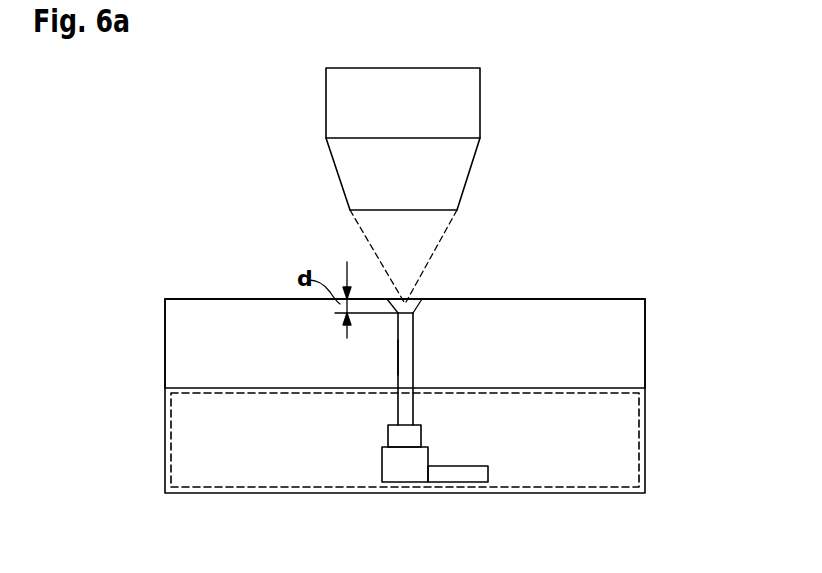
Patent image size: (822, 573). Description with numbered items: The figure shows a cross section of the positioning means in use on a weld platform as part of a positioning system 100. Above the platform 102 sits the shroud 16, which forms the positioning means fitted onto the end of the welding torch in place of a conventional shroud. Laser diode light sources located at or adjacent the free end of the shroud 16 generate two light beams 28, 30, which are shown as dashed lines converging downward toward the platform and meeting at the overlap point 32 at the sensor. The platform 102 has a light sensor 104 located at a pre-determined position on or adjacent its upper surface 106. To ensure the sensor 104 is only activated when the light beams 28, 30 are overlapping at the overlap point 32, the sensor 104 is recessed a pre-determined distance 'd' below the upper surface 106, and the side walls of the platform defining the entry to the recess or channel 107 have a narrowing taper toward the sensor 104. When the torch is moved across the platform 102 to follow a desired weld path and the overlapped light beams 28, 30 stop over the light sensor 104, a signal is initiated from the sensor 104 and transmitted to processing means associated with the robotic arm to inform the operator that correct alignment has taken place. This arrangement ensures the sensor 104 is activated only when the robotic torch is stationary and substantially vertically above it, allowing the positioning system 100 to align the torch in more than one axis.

The shroud 16 is at (463, 172).
The light beam 28 is at (368, 245).
The light beam 30 is at (440, 246).
The focal point 32 is at (404, 300).
The positioning system 100 is at (702, 355).
The platform 102 is at (632, 338).
The light sensor 104 is at (412, 314).
The upper surface 106 is at (597, 298).
The recess or channel 107 is at (395, 357).